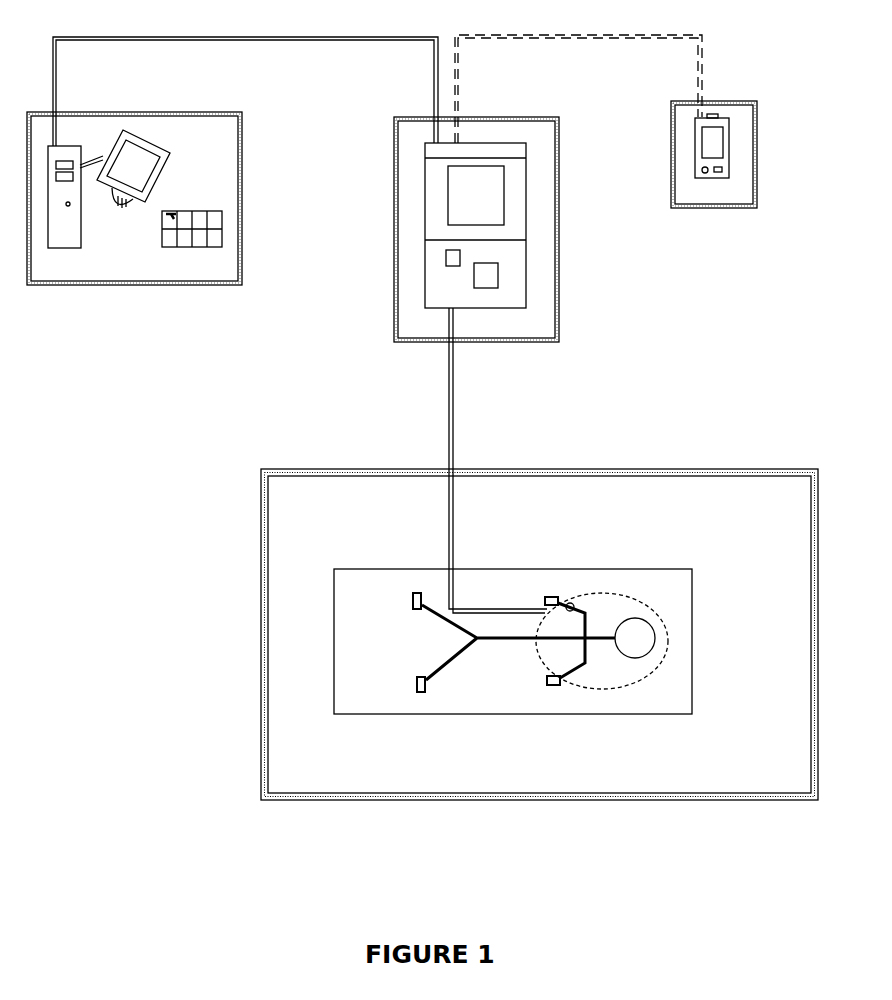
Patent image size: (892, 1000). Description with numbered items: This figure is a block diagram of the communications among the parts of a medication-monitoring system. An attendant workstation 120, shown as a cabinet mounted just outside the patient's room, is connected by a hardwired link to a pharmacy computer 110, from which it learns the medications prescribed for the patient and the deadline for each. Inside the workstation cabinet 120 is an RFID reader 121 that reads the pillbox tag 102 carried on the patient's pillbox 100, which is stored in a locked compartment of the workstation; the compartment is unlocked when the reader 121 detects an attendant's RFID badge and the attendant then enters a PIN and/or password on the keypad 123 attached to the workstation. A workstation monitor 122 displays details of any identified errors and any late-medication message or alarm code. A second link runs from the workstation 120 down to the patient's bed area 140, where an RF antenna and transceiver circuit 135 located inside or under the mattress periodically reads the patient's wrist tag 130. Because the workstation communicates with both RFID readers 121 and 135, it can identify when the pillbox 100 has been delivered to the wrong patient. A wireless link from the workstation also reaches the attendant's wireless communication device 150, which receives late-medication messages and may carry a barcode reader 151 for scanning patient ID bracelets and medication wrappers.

The pillbox 100 is at (222, 210).
The pillbox tag 102 is at (172, 217).
The pharmacy computer 110 is at (63, 152).
The attendant workstation 120 is at (515, 177).
The RFID reader 121 is at (455, 258).
The workstation monitor 122 is at (474, 180).
The keypad 123 is at (490, 280).
The wrist tag 130 is at (572, 603).
The RF antenna and transceiver circuit 135 is at (632, 596).
The patient support table 140 is at (678, 600).
The wireless communication device 150 is at (713, 138).
The barcode reader 151 is at (713, 115).